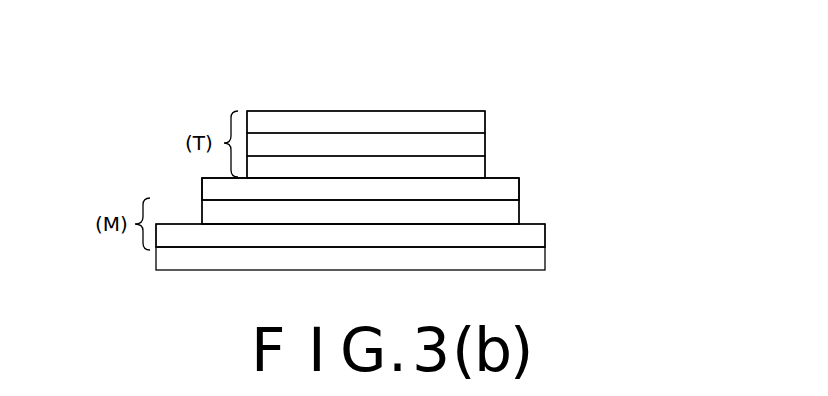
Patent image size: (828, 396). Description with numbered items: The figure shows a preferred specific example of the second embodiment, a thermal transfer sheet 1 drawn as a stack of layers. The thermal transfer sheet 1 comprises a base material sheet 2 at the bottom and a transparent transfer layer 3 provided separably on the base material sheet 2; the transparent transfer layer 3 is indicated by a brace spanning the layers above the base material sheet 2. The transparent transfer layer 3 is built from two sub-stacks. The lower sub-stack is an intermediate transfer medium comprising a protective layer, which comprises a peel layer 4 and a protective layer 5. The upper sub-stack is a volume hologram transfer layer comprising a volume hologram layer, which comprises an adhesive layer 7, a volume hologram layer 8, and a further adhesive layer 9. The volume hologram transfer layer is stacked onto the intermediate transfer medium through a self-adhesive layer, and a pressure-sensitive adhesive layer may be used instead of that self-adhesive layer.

The thermal transfer sheet 1 is at (375, 92).
The base material sheet 2 is at (537, 260).
The transparent transfer layer 3 is at (650, 107).
The peel layer 4 is at (537, 237).
The protective layer 5 is at (507, 212).
The adhesive layer 7 is at (472, 167).
The volume hologram layer 8 is at (472, 143).
The adhesive layer 9 is at (468, 117).